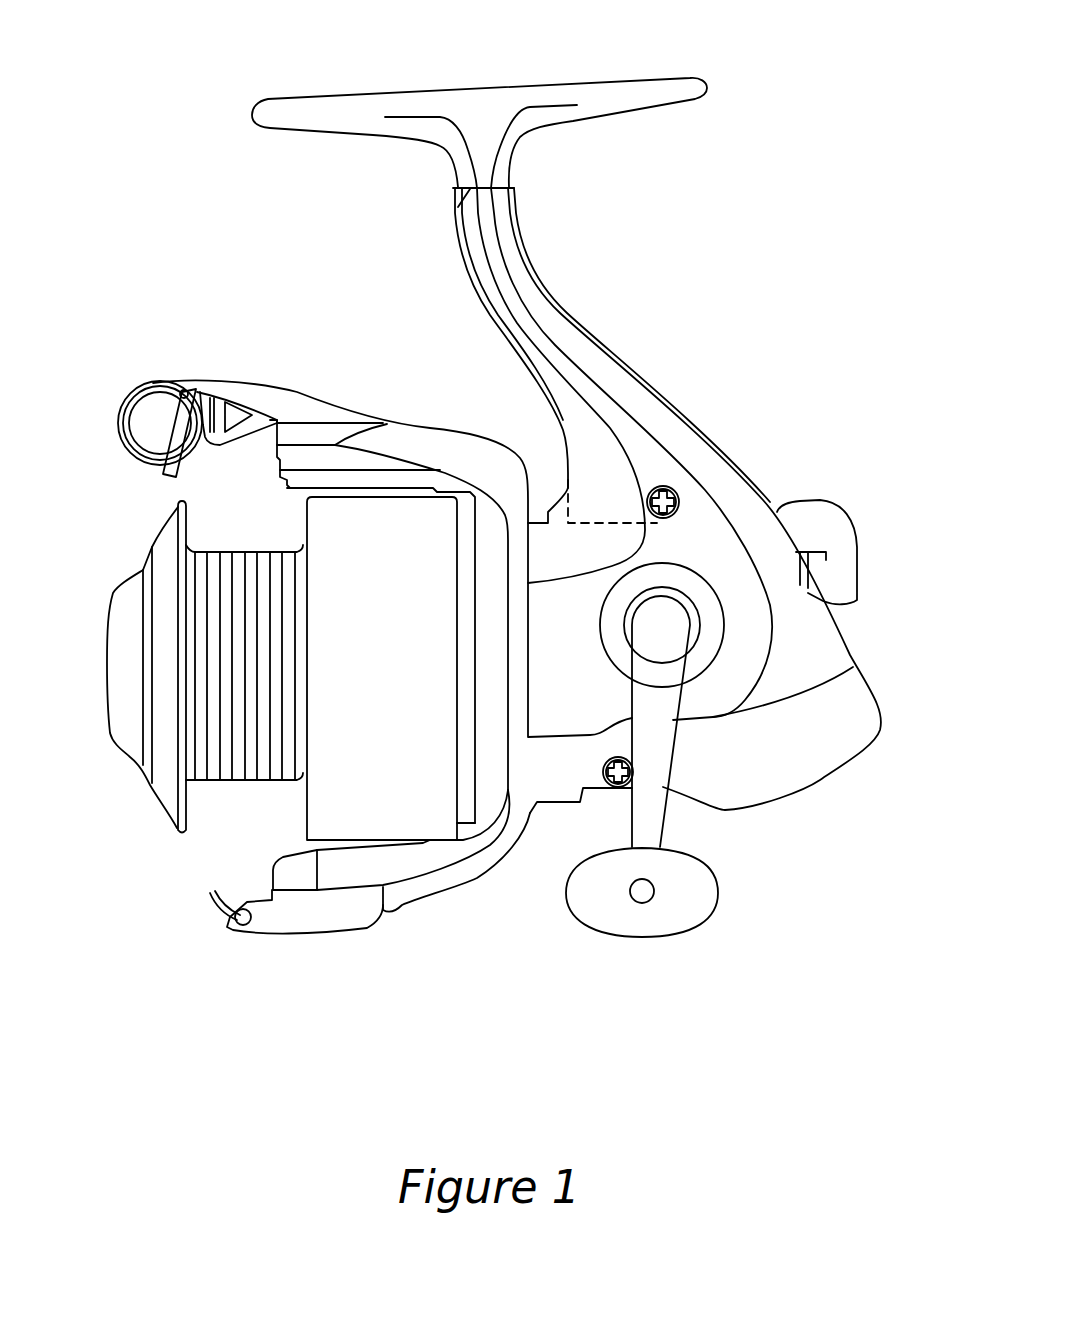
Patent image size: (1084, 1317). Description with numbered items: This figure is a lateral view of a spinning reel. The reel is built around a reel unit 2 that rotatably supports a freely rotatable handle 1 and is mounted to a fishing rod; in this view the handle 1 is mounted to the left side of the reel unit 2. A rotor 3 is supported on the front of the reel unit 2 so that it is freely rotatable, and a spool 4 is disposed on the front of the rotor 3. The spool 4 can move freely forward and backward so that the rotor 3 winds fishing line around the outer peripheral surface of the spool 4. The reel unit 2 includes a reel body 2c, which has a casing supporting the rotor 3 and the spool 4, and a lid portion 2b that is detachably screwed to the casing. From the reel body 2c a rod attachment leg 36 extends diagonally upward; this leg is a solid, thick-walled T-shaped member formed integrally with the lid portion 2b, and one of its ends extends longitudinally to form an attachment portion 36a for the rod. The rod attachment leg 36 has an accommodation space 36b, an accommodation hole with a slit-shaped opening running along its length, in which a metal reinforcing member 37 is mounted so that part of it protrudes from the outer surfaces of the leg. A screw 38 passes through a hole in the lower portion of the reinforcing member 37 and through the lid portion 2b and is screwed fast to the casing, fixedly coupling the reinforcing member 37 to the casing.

The handle 1 is at (652, 813).
The reel unit 2 is at (598, 287).
The lid portion 2b is at (777, 563).
The reel body 2c is at (853, 633).
The rotor 3 is at (500, 847).
The spool 4 is at (235, 757).
The rod attachment leg 36 is at (573, 353).
The attachment portion 36a is at (533, 82).
The accommodation space 36b is at (450, 208).
The reinforcing member 37 is at (680, 410).
The screw 38 is at (670, 493).